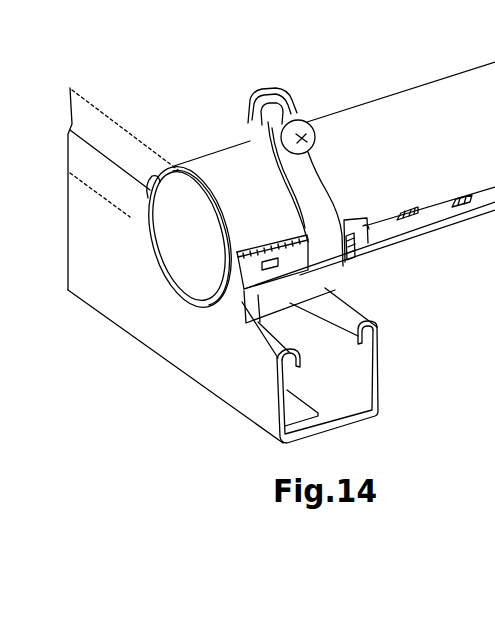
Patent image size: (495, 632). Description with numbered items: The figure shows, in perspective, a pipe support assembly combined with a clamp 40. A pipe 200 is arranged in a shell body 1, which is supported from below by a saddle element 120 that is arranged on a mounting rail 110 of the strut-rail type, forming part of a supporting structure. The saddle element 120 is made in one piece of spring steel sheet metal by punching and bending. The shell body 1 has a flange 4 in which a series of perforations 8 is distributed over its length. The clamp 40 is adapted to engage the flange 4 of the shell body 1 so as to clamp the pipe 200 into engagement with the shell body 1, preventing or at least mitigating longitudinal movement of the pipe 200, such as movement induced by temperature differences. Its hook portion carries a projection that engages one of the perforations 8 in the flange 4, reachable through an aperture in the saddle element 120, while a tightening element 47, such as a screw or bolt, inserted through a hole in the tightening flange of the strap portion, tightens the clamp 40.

The shell body 1 is at (398, 240).
The flange 4 is at (440, 208).
The perforations 8 is at (410, 208).
The clamp 40 is at (318, 159).
The tightening element 47 is at (269, 113).
The mounting rail 110 is at (174, 307).
The saddle element 120 is at (241, 300).
The pipe 200 is at (395, 122).